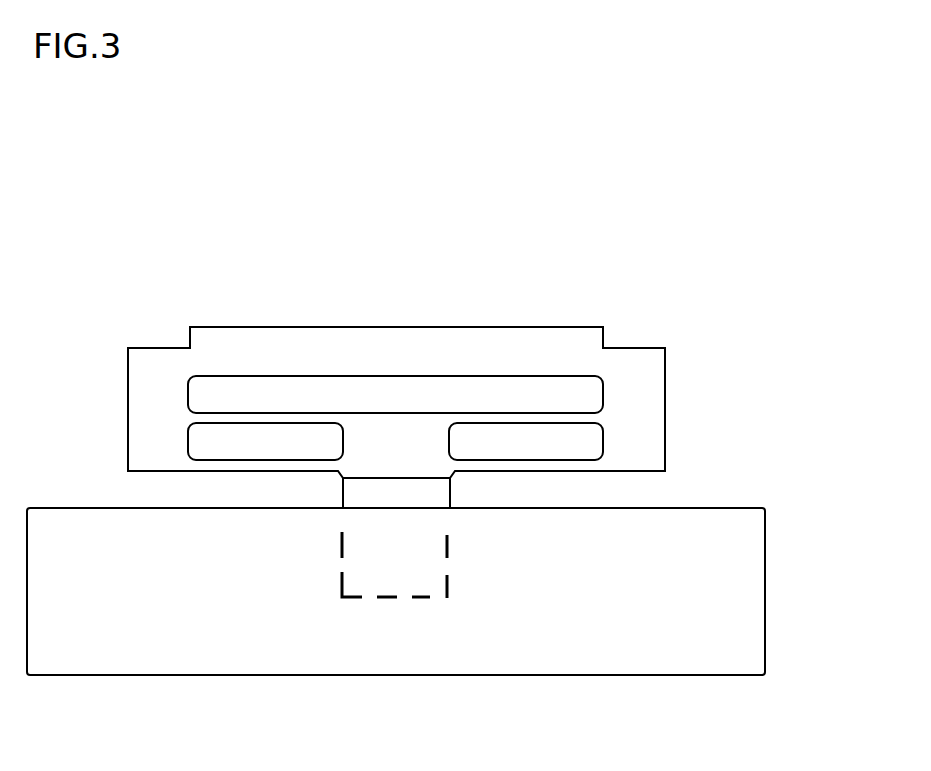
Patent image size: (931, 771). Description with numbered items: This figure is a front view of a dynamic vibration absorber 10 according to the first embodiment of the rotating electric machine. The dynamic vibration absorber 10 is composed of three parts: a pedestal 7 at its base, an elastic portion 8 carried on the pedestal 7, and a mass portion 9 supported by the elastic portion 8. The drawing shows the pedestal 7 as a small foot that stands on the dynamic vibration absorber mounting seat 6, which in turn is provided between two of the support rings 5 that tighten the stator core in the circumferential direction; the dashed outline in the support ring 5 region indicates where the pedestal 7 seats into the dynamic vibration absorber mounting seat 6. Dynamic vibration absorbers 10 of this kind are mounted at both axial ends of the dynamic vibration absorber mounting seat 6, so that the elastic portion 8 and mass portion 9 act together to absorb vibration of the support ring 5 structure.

The dynamic vibration absorber 10 is at (750, 257).
The mass portion 9 is at (275, 330).
The elastic portion 8 is at (582, 412).
The pedestal 7 is at (393, 472).
The dynamic vibration absorber mounting seat 6 is at (447, 578).
The support ring 5 is at (755, 628).